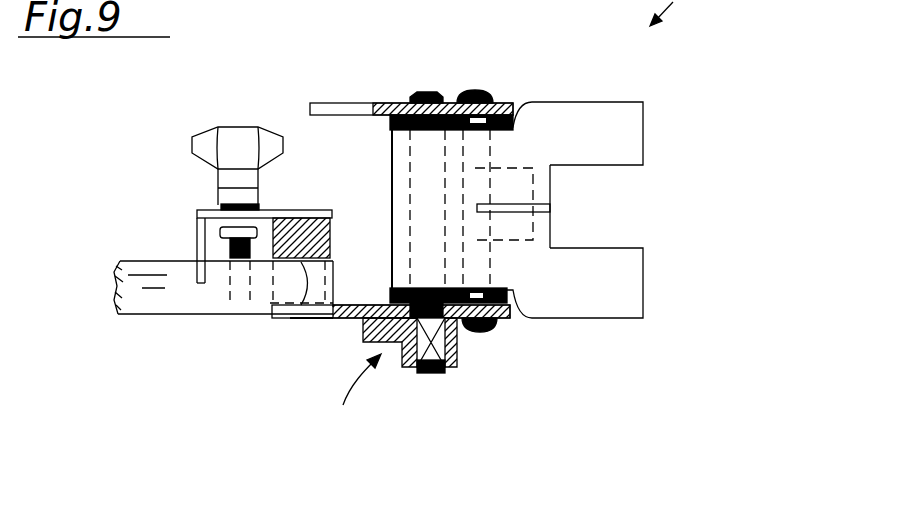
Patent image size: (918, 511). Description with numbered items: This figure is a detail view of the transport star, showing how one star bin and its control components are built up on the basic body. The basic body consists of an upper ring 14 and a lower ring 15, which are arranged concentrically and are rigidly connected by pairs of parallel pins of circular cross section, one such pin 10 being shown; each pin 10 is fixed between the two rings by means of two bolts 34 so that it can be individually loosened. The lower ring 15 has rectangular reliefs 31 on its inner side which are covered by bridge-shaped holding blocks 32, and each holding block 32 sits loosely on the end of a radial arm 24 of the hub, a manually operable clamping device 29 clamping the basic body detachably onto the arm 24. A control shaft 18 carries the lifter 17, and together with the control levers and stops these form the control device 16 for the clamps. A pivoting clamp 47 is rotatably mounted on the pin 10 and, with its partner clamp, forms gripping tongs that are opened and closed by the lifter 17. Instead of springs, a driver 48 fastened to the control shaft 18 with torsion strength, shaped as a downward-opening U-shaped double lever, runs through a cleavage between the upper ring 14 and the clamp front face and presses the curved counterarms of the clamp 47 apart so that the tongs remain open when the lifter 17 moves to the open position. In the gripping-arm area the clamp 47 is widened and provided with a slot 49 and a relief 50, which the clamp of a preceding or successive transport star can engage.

The pin 10 is at (461, 323).
The upper ring 14 is at (506, 95).
The lower ring 15 is at (512, 312).
The control device 16 is at (347, 395).
The lifter 17 is at (404, 182).
The control shaft 18 is at (427, 92).
The radial arm 24 is at (152, 282).
The clamping device 29 is at (206, 152).
The rectangular relief 31 is at (282, 318).
The holding block 32 is at (297, 318).
The bolt 34 is at (476, 90).
The pivoting clamp 47 is at (608, 130).
The driver 48 is at (390, 128).
The slot 49 is at (549, 207).
The relief 50 is at (608, 168).